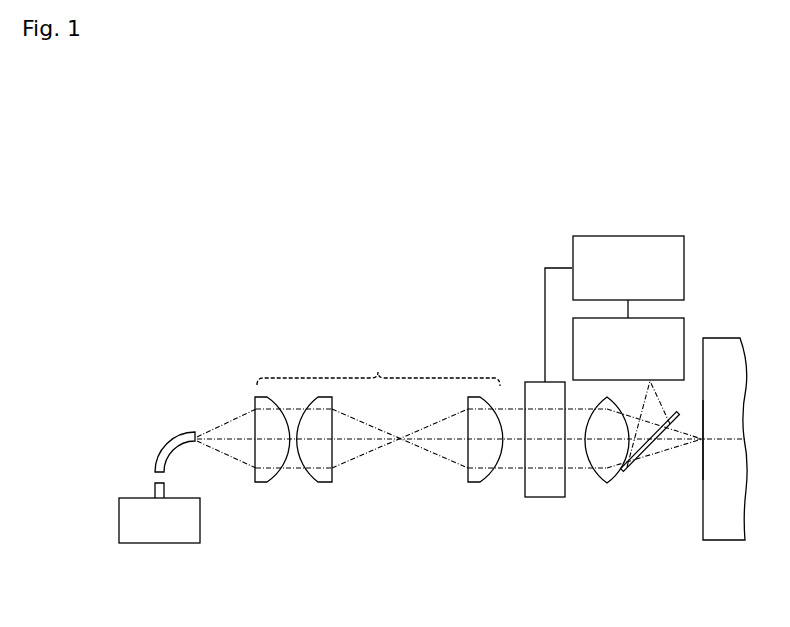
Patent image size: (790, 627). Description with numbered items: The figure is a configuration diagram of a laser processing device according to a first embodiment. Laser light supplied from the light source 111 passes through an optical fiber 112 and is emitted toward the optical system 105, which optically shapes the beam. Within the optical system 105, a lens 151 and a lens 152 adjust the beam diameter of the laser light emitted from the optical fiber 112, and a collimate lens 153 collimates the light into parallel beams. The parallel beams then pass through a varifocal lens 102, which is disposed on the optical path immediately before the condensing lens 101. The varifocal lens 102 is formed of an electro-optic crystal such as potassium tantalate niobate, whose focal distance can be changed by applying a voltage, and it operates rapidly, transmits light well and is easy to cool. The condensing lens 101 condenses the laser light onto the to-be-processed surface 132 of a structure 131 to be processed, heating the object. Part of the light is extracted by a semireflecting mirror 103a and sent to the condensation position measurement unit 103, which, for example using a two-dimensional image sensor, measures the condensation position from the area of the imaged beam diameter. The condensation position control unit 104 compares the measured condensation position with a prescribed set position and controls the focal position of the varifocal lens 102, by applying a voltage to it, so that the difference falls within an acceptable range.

The condensing lens 101 is at (607, 483).
The varifocal lens 102 is at (545, 498).
The condensation position measurement unit 103 is at (684, 324).
The semireflecting mirror 103a is at (625, 469).
The condensation position control unit 104 is at (684, 268).
The optical system 105 is at (378, 378).
The light source 111 is at (160, 544).
The optical fiber 112 is at (172, 437).
The structure to be processed 131 is at (720, 541).
The to-be-processed surface 132 is at (703, 517).
The lens 151 is at (262, 483).
The lens 152 is at (327, 483).
The collimate lens 153 is at (476, 483).